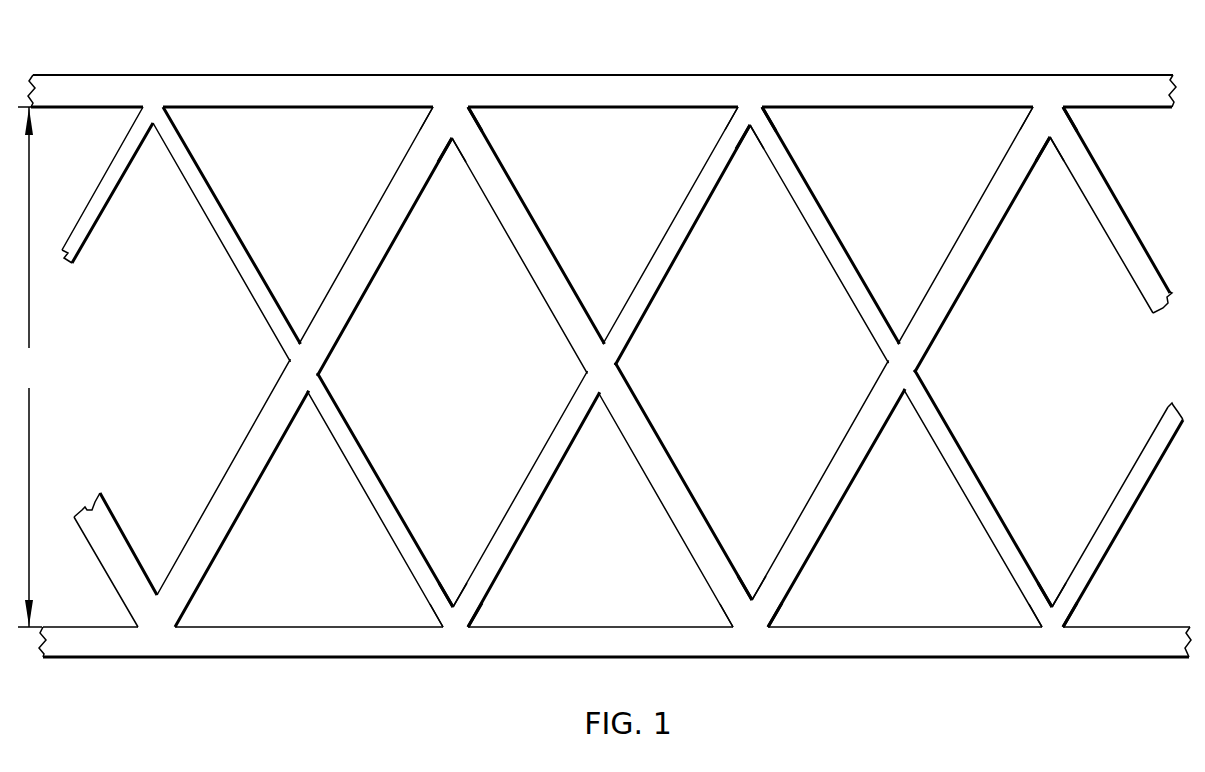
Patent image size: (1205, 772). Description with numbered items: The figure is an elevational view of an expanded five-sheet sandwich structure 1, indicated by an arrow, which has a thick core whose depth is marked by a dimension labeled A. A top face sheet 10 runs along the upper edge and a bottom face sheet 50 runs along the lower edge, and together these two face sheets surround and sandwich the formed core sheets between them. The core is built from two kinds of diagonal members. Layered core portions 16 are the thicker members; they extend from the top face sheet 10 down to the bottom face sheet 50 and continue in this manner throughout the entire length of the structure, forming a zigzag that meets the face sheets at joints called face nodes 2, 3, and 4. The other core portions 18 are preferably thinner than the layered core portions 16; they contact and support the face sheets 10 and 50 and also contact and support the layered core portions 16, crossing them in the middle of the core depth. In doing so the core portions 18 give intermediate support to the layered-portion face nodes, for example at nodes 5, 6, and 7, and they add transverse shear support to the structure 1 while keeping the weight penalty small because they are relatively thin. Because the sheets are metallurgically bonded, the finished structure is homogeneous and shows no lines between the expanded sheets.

The expanded sandwich structure 1 is at (815, 66).
The top face sheet 10 is at (590, 80).
The bottom face sheet 50 is at (872, 649).
The layered core portions 16 is at (540, 252).
The core portions 18 is at (246, 248).
The face node 2 is at (455, 119).
The node 6 is at (763, 111).
The face node 3 is at (1056, 112).
The node 5 is at (458, 626).
The face node 4 is at (754, 626).
The node 7 is at (1056, 598).